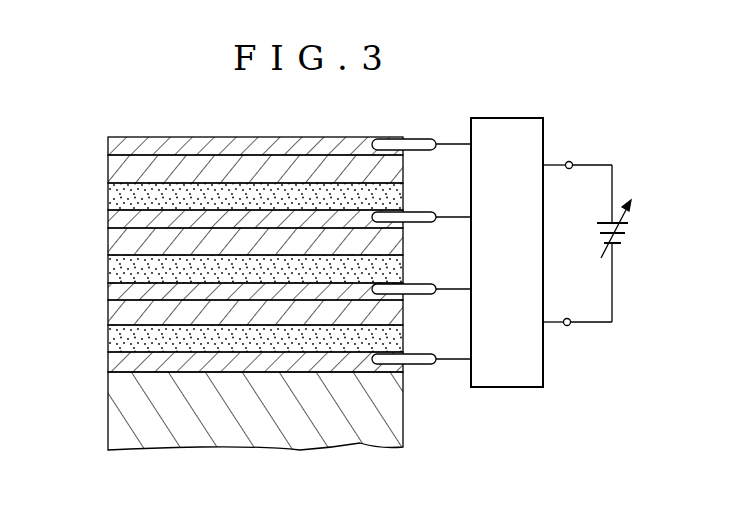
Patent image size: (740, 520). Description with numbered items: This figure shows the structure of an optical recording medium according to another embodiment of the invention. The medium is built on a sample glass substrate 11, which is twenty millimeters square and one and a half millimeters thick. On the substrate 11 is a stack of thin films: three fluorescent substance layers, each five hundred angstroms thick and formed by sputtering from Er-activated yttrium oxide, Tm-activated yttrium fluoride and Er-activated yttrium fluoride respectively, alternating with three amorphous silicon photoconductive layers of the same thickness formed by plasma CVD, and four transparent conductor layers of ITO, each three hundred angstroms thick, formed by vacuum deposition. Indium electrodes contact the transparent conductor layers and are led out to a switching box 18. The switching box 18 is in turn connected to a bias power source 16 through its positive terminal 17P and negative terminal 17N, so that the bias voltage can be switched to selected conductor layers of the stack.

The glass substrate 11 is at (142, 446).
The bias power source 16 is at (595, 233).
The positive terminal 17P is at (569, 161).
The negative terminal 17N is at (566, 326).
The switching box 18 is at (524, 117).